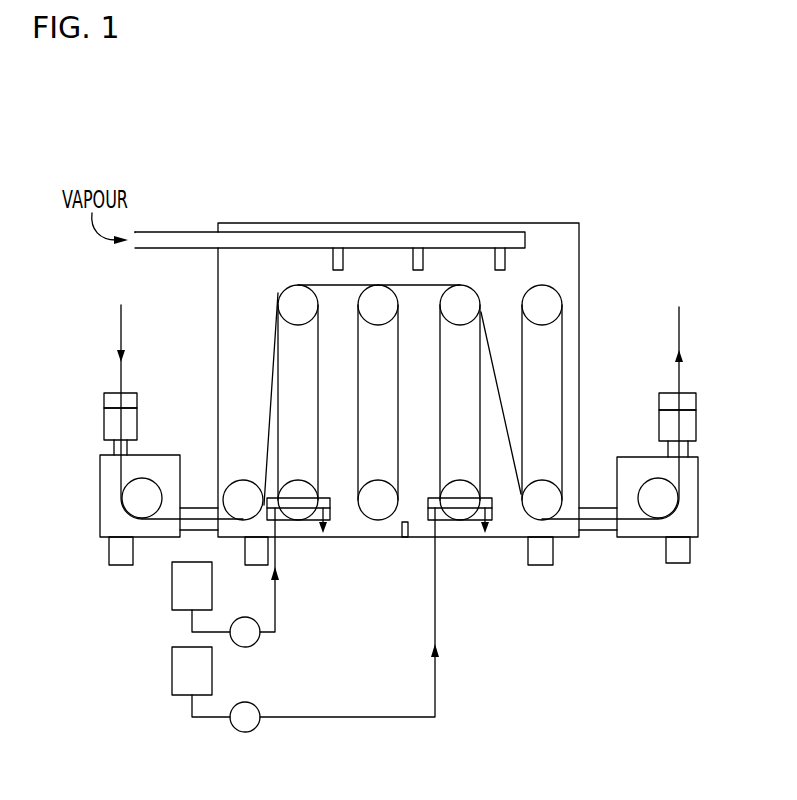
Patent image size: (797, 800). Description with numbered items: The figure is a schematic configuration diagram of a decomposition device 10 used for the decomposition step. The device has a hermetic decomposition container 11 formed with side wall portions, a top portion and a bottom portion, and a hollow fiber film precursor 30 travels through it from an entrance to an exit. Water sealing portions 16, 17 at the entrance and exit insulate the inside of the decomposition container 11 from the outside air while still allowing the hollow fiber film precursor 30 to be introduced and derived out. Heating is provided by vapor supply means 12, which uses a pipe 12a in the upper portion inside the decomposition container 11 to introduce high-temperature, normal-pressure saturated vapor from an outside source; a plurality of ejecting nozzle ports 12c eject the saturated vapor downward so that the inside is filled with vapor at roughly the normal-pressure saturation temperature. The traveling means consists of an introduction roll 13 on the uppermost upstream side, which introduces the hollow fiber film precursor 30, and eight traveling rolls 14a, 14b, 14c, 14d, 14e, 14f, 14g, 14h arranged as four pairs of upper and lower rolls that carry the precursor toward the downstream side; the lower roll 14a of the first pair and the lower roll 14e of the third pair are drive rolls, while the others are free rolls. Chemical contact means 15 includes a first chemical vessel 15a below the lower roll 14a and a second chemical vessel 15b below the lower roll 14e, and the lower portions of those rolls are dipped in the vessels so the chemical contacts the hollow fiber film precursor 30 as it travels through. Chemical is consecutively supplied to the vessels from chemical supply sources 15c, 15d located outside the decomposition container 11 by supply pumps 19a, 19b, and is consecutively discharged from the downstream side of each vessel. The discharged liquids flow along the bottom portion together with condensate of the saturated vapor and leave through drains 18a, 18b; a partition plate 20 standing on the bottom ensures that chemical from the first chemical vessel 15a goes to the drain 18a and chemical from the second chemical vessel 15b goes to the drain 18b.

The decomposition device 10 is at (562, 110).
The decomposition container 11 is at (580, 257).
The vapor supply means 12 is at (195, 212).
The pipe 12a is at (167, 243).
The ejecting nozzle ports 12c is at (338, 250).
The introduction roll 13 is at (243, 490).
The lower roll of the first pair of the rolls 14a is at (298, 490).
The traveling roll 14b is at (290, 297).
The traveling roll 14c is at (378, 490).
The traveling roll 14d is at (380, 298).
The lower roll of the third pair of the rolls 14e is at (460, 490).
The traveling roll 14f is at (460, 298).
The traveling roll 14g is at (545, 503).
The traveling roll 14h is at (550, 297).
The chemical contact means 15 is at (392, 599).
The first chemical vessel 15a is at (302, 522).
The second chemical vessel 15b is at (423, 507).
The chemical supply source 15c is at (172, 592).
The chemical supply source 15d is at (172, 674).
The water sealing portion 16 is at (100, 488).
The water sealing portion 17 is at (698, 490).
The drain 18a is at (255, 562).
The drain 18b is at (553, 555).
The supply pump 19a is at (245, 647).
The supply pump 19b is at (245, 732).
The partition plate 20 is at (405, 537).
The hollow fiber film precursor 30 is at (120, 333).